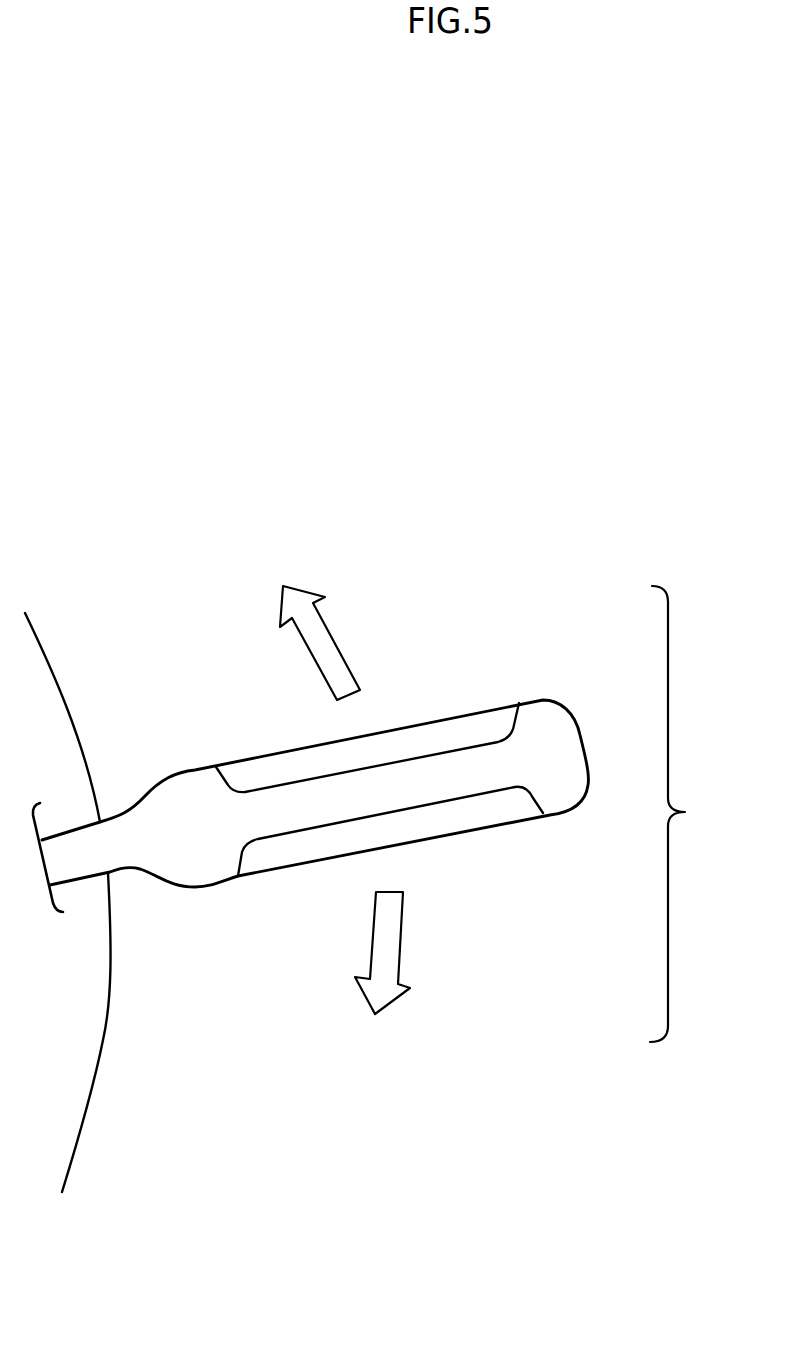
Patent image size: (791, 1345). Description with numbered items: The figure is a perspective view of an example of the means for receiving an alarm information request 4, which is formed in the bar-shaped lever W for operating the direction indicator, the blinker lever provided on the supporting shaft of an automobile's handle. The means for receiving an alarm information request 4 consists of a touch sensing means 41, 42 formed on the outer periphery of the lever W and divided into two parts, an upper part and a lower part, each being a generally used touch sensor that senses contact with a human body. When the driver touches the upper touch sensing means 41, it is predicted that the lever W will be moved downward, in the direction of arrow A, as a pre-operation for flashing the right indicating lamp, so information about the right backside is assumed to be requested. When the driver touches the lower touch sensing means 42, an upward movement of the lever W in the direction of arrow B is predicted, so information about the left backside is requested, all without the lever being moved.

The means for receiving an alarm information request 4 is at (681, 814).
The touch sensing means 41 is at (458, 730).
The touch sensing means 42 is at (445, 823).
The lever for operating the direction indicator w is at (216, 876).
The arrow A is at (372, 963).
The arrow B is at (301, 627).